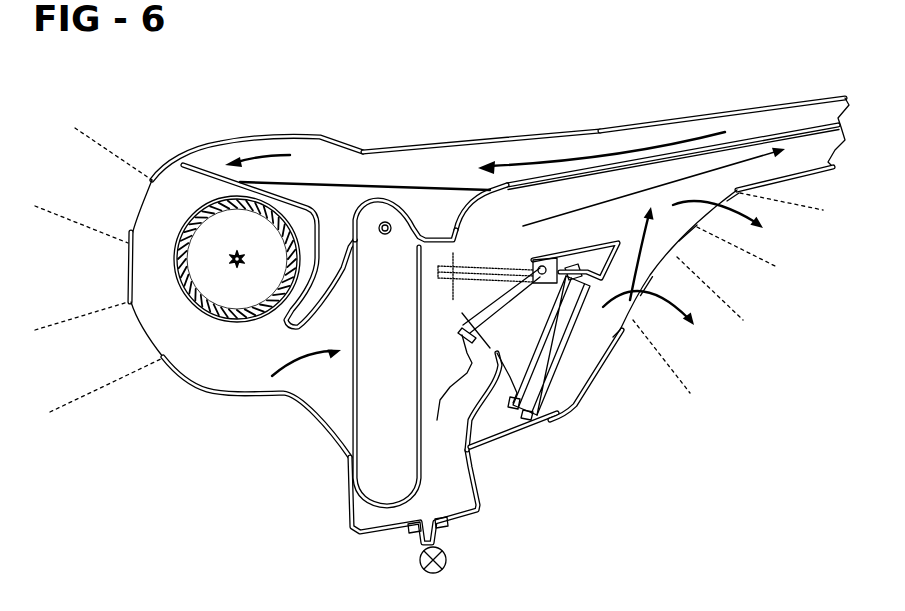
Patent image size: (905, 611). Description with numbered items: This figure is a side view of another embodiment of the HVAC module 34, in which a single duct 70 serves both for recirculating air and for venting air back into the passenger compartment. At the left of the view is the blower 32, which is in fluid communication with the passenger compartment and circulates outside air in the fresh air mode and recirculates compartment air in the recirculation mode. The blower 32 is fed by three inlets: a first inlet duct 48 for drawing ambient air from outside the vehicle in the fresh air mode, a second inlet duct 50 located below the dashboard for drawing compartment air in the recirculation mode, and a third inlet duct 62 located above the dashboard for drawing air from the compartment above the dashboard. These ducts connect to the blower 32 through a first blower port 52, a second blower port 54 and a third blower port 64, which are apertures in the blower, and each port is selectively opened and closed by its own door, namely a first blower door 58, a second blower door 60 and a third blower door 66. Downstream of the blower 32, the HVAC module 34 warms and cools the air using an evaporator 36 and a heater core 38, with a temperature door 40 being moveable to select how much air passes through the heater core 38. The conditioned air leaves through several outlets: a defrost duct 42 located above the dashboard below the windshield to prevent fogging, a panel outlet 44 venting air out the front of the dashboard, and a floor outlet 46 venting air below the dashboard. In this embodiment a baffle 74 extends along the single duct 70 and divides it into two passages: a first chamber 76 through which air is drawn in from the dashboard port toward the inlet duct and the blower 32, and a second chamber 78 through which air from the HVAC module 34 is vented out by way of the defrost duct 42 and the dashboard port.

The blower 32 is at (103, 247).
The HVAC module 34 is at (520, 440).
The evaporator 36 is at (357, 435).
The heater core 38 is at (552, 393).
The temperature door 40 is at (437, 420).
The defrost duct 42 is at (634, 167).
The panel outlet 44 is at (782, 200).
The floor outlet 46 is at (678, 373).
The first inlet duct 48 is at (88, 140).
The second inlet duct 50 is at (103, 385).
The first blower port 52 is at (153, 180).
The second blower port 54 is at (132, 302).
The first blower door 58 is at (128, 230).
The second blower door 60 is at (163, 350).
The third inlet duct 62 is at (365, 150).
The third blower port 64 is at (200, 157).
The third blower door 66 is at (207, 170).
The single duct 70 is at (720, 112).
The baffle 74 is at (777, 140).
The first chamber 76 is at (817, 112).
The second chamber 78 is at (803, 162).